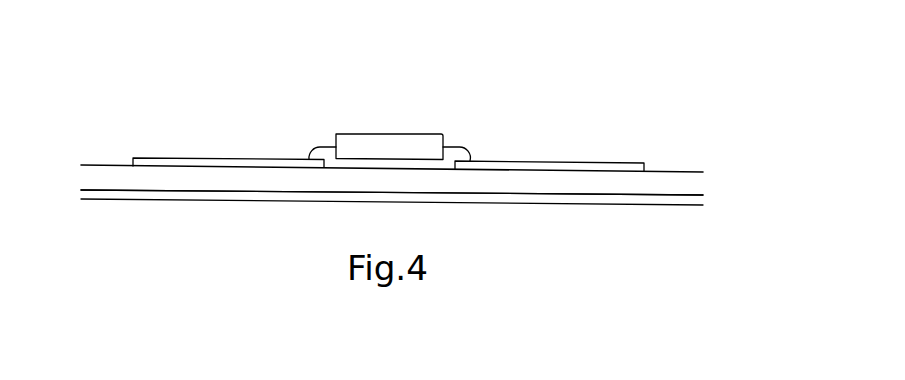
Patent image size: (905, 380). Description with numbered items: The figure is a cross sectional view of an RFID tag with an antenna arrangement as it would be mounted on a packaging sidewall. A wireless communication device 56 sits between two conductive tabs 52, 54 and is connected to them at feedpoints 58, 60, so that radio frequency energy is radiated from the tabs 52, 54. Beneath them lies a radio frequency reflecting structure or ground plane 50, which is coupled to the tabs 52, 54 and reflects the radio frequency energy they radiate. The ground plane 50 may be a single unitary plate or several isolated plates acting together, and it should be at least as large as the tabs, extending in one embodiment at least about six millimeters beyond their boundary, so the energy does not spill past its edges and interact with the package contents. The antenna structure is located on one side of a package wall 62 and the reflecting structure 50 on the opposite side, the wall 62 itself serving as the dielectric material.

The ground plane 50 is at (317, 203).
The tab 52 is at (197, 157).
The tab 54 is at (538, 162).
The wireless communication device 56 is at (375, 133).
The feedpoint 58 is at (319, 147).
The feedpoint 60 is at (462, 147).
The package wall 62 is at (540, 185).